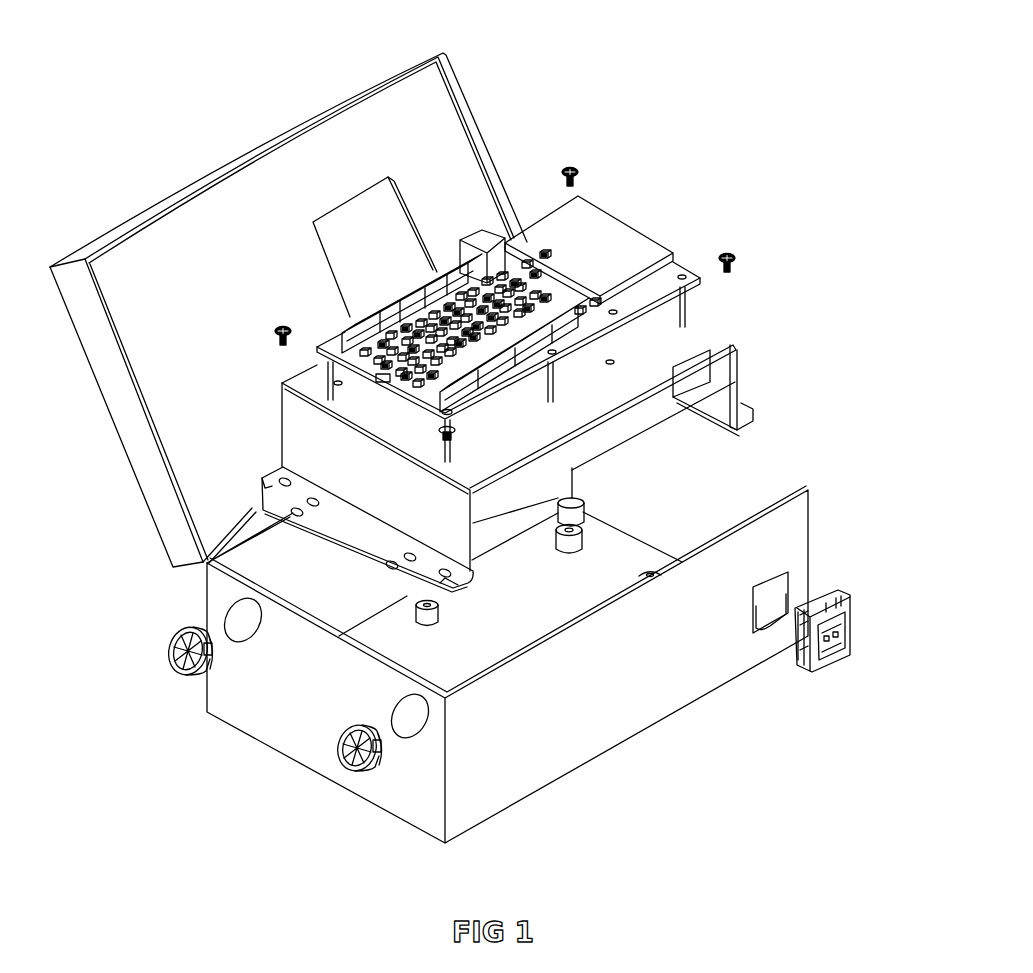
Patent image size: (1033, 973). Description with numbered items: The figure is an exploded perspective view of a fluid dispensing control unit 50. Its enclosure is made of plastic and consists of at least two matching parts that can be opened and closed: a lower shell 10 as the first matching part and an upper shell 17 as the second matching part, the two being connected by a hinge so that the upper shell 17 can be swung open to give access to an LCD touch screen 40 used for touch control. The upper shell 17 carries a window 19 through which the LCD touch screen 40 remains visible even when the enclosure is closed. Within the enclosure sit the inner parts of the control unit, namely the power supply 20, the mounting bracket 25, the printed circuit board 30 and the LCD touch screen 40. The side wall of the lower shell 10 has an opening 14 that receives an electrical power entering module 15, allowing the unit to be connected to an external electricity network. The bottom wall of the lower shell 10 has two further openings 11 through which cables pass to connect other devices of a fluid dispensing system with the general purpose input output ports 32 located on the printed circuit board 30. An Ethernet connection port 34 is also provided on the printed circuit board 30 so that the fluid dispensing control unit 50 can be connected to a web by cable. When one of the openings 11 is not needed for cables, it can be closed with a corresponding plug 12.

The fluid dispensing control unit 50 is at (661, 77).
The lower shell 10 is at (567, 738).
The openings 11 is at (247, 641).
The plug 12 is at (345, 753).
The opening 14 is at (767, 607).
The electrical power entering module 15 is at (832, 667).
The upper shell 17 is at (140, 463).
The window 19 is at (367, 232).
The power supply 20 is at (603, 440).
The mounting bracket 25 is at (673, 365).
The printed circuit board 30 is at (588, 317).
The general purpose input output ports 32 is at (455, 260).
The Ethernet connection port 34 is at (483, 240).
The LCD touch screen 40 is at (577, 235).